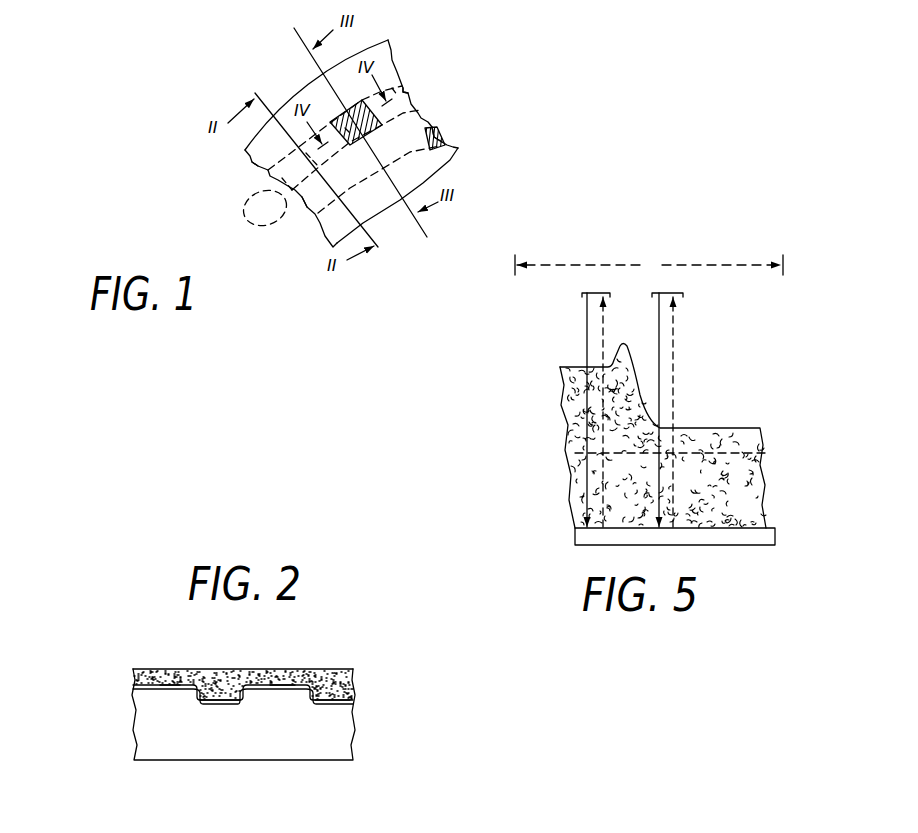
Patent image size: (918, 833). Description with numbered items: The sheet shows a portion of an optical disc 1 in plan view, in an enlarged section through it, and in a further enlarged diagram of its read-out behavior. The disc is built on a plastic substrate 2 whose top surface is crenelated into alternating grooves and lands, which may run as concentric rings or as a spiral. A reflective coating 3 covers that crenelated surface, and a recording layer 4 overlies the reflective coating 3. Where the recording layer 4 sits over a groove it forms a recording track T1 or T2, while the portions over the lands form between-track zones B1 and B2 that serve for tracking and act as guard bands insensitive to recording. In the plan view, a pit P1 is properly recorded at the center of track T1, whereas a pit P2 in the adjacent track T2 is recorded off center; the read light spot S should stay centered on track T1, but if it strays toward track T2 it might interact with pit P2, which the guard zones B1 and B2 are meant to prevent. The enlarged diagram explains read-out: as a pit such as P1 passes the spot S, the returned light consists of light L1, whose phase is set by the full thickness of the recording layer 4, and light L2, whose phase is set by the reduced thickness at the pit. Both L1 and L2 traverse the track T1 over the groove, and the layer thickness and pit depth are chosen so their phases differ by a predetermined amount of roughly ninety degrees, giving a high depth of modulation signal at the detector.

In FIG. 1, the optical disc 1 is at (462, 92).
In FIG. 2, the optical disc 1 is at (203, 656).
In FIG. 2, the substrate 2 is at (133, 732).
In FIG. 2, the reflective coating 3 is at (133, 688).
In FIG. 5, the reflective coating 3 is at (770, 540).
In FIG. 2, the recording layer 4 is at (133, 672).
In FIG. 5, the recording layer 4 is at (757, 480).
In FIG. 1, the between-track zone B1 is at (245, 162).
In FIG. 2, the between-track zone B1 is at (170, 690).
In FIG. 1, the between-track zone B2 is at (306, 217).
In FIG. 2, the between-track zone B2 is at (283, 690).
In FIG. 1, the recording track T1 is at (408, 92).
In FIG. 2, the recording track T1 is at (223, 705).
In FIG. 1, the recording track T2 is at (438, 158).
In FIG. 2, the recording track T2 is at (330, 706).
In FIG. 1, the pit P1 is at (383, 132).
In FIG. 1, the pit P2 is at (443, 130).
In FIG. 1, the read light spot S is at (255, 223).
In FIG. 5, the read light spot S is at (649, 264).
In FIG. 5, the light L1 is at (596, 399).
In FIG. 5, the light L2 is at (667, 399).